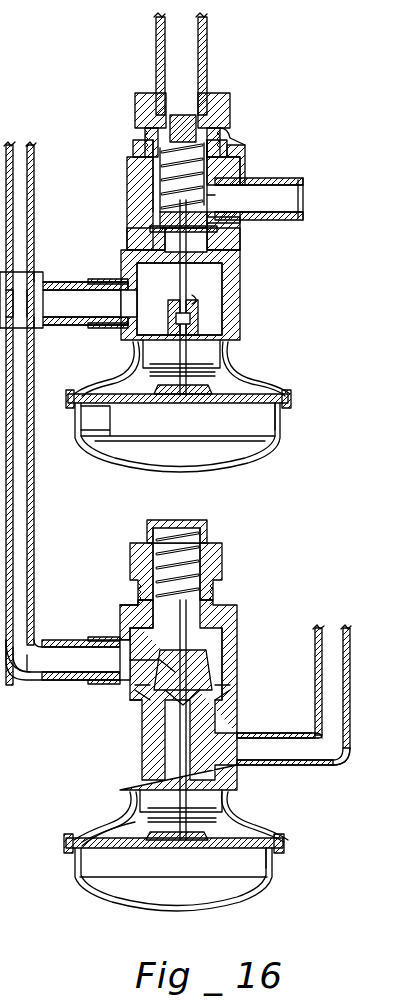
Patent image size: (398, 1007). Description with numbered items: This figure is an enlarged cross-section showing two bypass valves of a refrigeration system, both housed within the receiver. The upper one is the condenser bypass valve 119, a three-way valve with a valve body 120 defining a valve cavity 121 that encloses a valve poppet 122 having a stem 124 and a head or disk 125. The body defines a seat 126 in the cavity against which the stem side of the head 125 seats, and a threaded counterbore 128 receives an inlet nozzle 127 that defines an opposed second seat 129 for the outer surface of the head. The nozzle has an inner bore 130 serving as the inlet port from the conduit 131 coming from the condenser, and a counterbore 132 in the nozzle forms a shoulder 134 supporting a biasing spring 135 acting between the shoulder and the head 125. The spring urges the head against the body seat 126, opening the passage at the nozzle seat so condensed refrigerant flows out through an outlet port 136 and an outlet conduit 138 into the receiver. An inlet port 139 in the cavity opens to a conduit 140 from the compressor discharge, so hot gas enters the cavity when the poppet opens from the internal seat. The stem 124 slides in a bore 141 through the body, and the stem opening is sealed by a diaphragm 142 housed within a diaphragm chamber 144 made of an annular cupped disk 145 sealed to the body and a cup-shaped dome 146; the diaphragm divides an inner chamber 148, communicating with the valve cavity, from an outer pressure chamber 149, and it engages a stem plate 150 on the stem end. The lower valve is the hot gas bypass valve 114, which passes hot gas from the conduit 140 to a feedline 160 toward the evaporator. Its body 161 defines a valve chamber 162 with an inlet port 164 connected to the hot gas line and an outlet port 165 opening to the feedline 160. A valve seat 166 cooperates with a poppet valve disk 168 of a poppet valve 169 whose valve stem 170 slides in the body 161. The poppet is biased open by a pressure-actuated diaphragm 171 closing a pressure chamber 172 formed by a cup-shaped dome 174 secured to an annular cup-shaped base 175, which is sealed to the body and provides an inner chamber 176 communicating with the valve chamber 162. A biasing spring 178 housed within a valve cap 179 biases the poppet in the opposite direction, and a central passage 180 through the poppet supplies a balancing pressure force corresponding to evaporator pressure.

The hot gas bypass valve 114 is at (237, 606).
The condenser bypass valve 119 is at (250, 150).
The valve body 120 is at (320, 296).
The valve cavity 121 is at (222, 272).
The valve poppet 122 is at (190, 290).
The stem 124 is at (216, 356).
The poppet valve head 125 is at (228, 248).
The valve body seat 126 is at (124, 250).
The inlet nozzle 127 is at (222, 112).
The threaded counterbore 128 is at (130, 215).
The nozzle seat 129 is at (223, 216).
The inner bore 130 is at (140, 102).
The conduit 131 is at (198, 38).
The counterbore 132 is at (170, 160).
The shoulder 134 is at (206, 108).
The biasing spring 135 is at (230, 130).
The outlet port 136 is at (288, 214).
The outlet conduit 138 is at (302, 193).
The inlet port 139 is at (150, 322).
The conduit 140 is at (72, 300).
The bore 141 is at (198, 326).
The diaphragm 142 is at (268, 386).
The diaphragm chamber 144 is at (287, 442).
The annular cupped disk 145 is at (250, 372).
The cup-shaped dome 146 is at (248, 456).
The inner chamber 148 is at (110, 444).
The outer pressure chamber 149 is at (196, 452).
The stem plate 150 is at (160, 410).
The feedline 160 is at (324, 702).
The valve body 161 is at (237, 698).
The valve chamber 162 is at (214, 652).
The inlet port 164 is at (130, 672).
The outlet port 165 is at (220, 758).
The valve seat 166 is at (130, 700).
The poppet valve disk 168 is at (216, 690).
The poppet valve 169 is at (210, 676).
The valve stem 170 is at (150, 806).
The diaphragm 171 is at (284, 858).
The pressure chamber 172 is at (258, 868).
The cup-shaped disk or dome 174 is at (228, 902).
The annular cup-shaped base 175 is at (238, 810).
The inner chamber 176 is at (104, 832).
The biasing spring 178 is at (200, 540).
The valve cap 179 is at (226, 566).
The central passage 180 is at (150, 632).